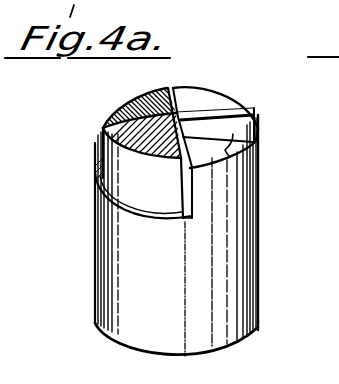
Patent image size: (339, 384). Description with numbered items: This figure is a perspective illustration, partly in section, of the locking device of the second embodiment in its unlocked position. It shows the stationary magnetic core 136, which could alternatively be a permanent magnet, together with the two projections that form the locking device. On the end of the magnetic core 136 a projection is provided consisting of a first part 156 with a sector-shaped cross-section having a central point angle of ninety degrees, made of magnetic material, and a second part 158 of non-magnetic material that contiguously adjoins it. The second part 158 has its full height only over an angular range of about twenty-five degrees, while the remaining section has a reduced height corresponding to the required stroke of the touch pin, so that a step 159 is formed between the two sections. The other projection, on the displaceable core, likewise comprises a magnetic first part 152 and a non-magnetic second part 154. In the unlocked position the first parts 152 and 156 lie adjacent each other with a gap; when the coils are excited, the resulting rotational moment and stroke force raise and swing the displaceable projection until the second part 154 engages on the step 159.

The magnetic core 136 is at (233, 299).
The first part 152 is at (125, 110).
The second part 154 is at (139, 161).
The first part 156 is at (212, 93).
The second part 158 is at (242, 118).
The step 159 is at (235, 155).